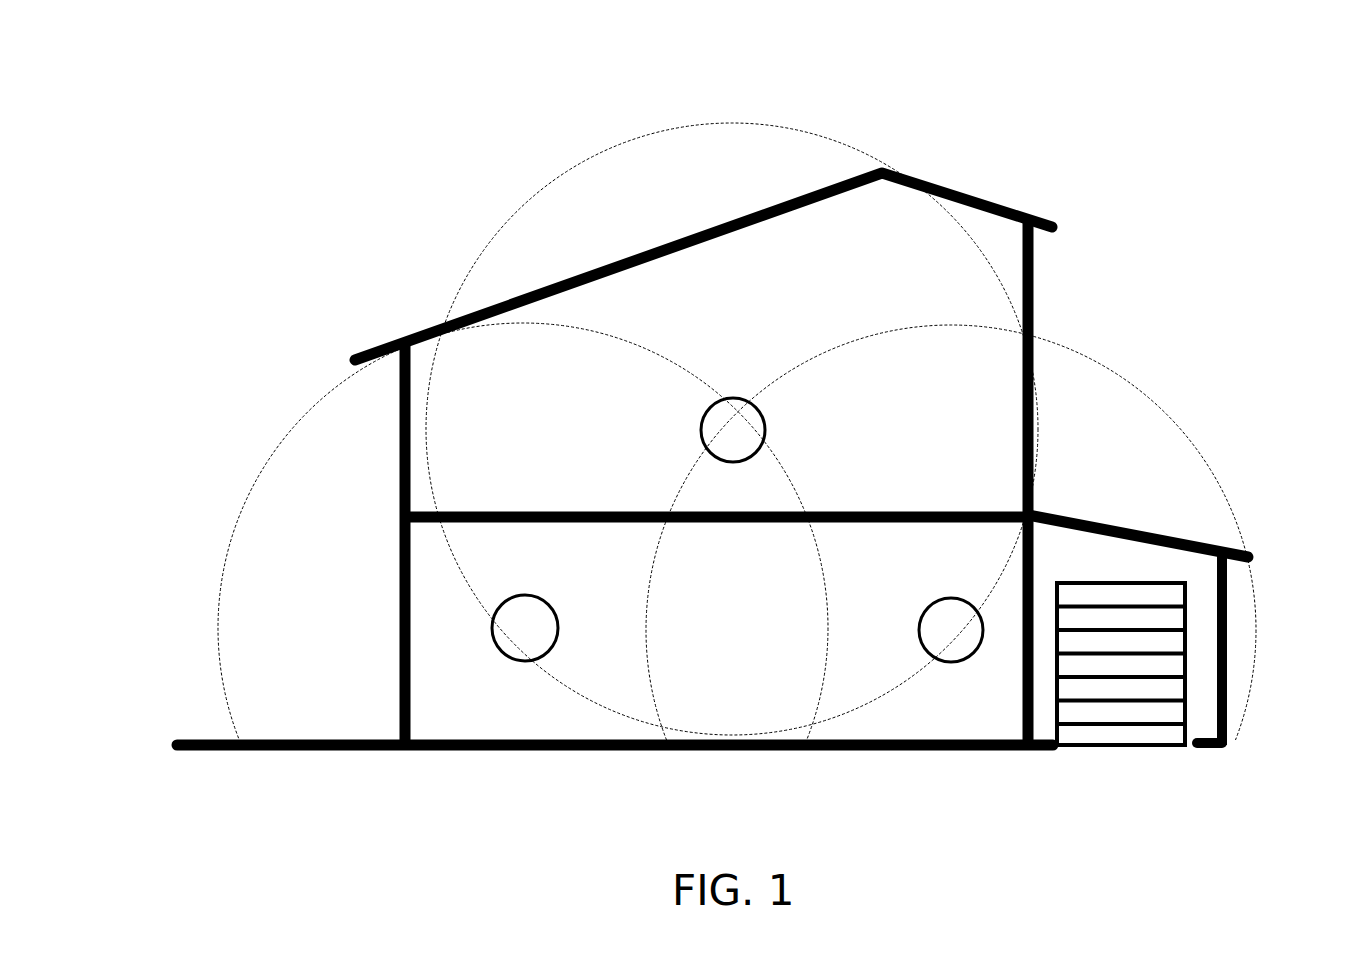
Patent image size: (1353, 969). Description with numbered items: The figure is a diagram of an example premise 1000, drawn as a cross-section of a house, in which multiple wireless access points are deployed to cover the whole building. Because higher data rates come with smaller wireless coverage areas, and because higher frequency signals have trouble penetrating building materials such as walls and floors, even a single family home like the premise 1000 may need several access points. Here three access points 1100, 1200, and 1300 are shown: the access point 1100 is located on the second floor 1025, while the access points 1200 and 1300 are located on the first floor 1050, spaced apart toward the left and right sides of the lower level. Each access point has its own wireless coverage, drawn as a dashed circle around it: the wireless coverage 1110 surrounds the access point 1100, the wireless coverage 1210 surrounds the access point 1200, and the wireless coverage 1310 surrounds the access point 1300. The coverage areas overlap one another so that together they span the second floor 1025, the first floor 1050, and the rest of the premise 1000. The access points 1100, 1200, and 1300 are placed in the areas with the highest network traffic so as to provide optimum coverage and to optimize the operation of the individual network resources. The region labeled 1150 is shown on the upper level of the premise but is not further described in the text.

The premise 1000 is at (1000, 205).
The second floor 1025 is at (1012, 268).
The first floor 1050 is at (435, 638).
The upper floor 1150 is at (716, 483).
The access point 1100 is at (732, 430).
The wireless coverage 1110 is at (735, 123).
The access point 1200 is at (525, 628).
The wireless coverage 1210 is at (307, 413).
The access point 1300 is at (950, 630).
The wireless coverage 1310 is at (1167, 413).